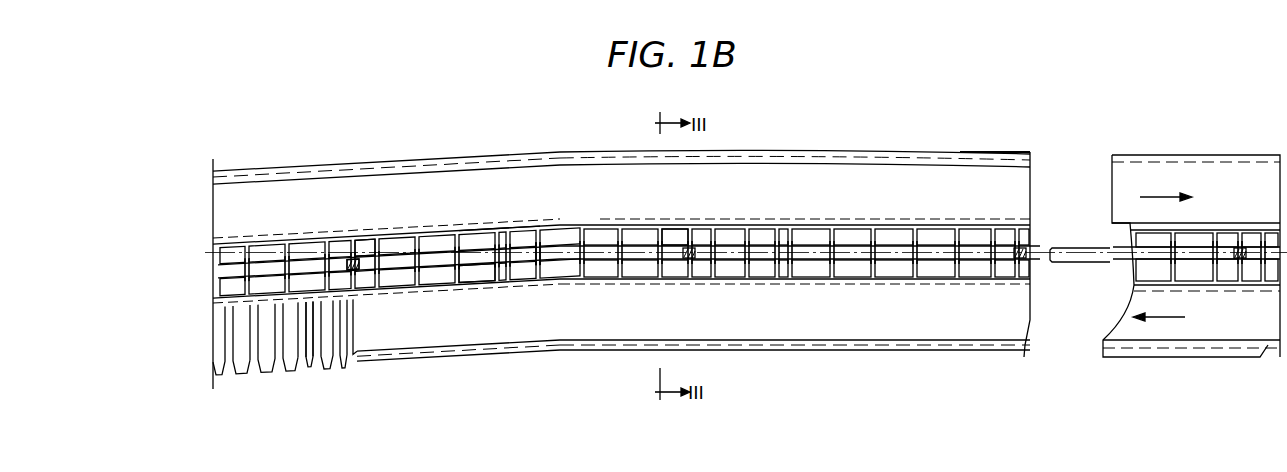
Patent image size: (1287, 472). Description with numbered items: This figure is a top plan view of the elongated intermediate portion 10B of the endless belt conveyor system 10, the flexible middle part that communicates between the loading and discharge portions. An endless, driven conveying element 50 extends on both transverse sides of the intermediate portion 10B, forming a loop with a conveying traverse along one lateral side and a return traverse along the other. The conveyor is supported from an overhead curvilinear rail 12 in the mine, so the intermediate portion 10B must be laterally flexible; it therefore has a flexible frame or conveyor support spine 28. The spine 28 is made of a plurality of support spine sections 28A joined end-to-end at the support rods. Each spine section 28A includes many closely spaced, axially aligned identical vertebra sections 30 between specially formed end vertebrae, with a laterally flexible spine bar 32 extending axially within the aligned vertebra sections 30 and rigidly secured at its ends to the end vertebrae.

The endless belt conveyor system 10 is at (365, 150).
The intermediate portion 10B is at (817, 187).
The endless driven conveying element 50 is at (993, 187).
The overhead rail 12 is at (1093, 262).
The conveyor support spine 28 is at (893, 268).
The support spine section 28A is at (487, 225).
The vertebra section 30 is at (595, 272).
The spine bar 32 is at (558, 250).